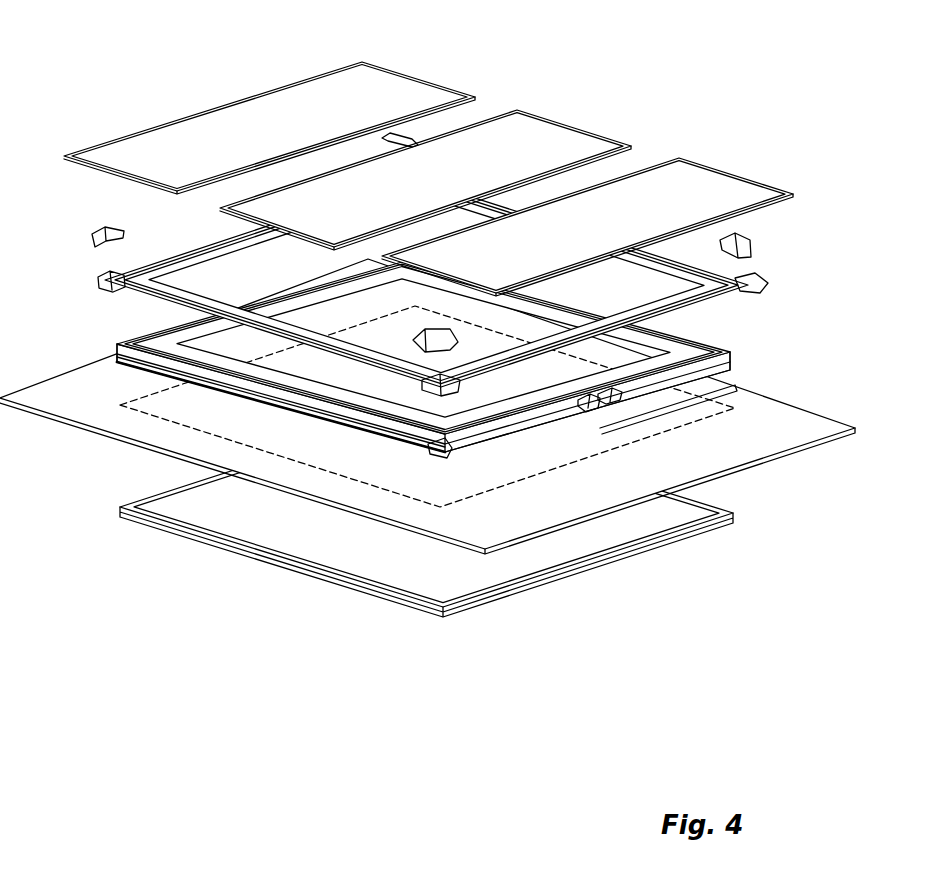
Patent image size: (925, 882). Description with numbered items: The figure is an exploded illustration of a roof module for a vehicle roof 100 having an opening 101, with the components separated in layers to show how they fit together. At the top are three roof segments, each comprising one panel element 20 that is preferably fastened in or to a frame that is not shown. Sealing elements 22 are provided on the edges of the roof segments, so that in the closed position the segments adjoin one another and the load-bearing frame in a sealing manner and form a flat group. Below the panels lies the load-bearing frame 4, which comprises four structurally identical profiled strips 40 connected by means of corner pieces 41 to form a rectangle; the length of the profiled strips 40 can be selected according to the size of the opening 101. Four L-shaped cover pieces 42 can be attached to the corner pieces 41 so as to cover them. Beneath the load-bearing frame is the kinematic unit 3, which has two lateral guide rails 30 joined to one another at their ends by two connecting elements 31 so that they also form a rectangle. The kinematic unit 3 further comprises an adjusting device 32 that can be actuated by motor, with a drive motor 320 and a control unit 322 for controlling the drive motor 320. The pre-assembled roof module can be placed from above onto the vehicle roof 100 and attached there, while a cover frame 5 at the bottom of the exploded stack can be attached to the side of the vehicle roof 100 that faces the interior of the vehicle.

The kinematic unit 3 is at (462, 382).
The load-bearing frame 4 is at (402, 278).
The cover frame 5 is at (228, 548).
The panel element 20 is at (428, 160).
The sealing element 22 is at (219, 104).
The guide rail 30 is at (300, 409).
The connecting element 31 is at (357, 280).
The adjusting device 32 is at (675, 443).
The profiled strip 40 is at (657, 317).
The corner piece 41 is at (101, 284).
The L-shaped cover piece 42 is at (96, 240).
The vehicle roof 100 is at (427, 470).
The opening 101 is at (458, 492).
The drive motor 320 is at (583, 406).
The control unit 322 is at (640, 406).